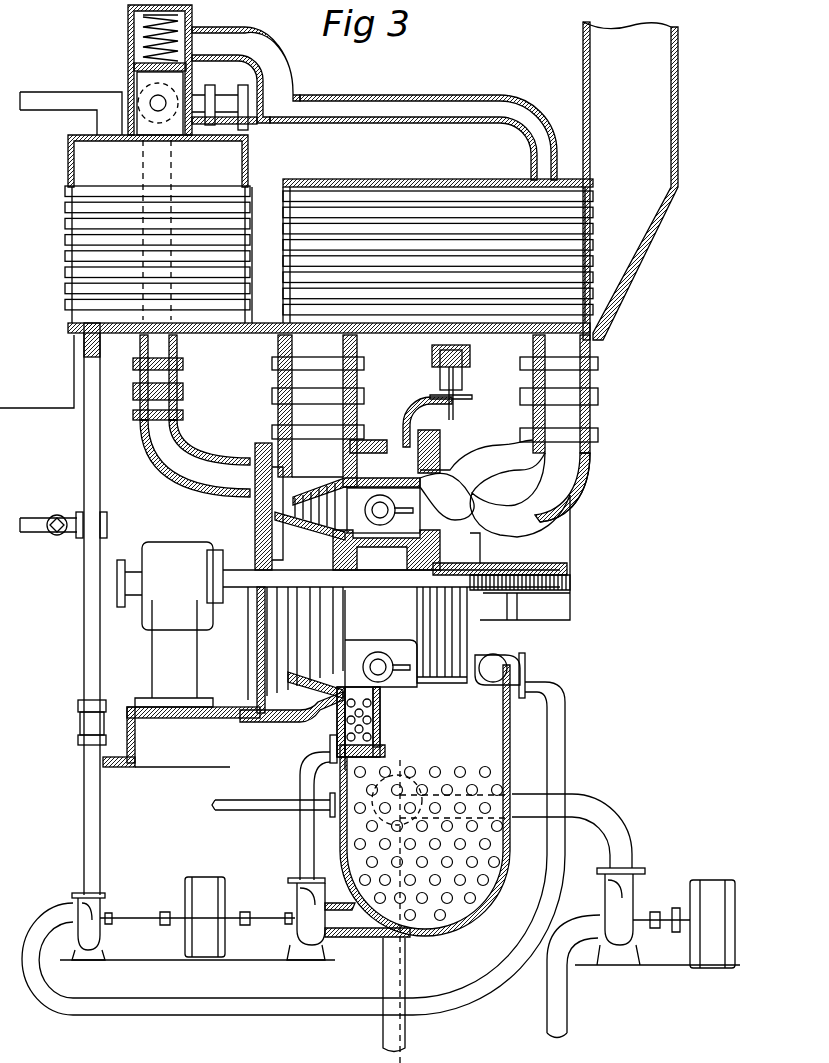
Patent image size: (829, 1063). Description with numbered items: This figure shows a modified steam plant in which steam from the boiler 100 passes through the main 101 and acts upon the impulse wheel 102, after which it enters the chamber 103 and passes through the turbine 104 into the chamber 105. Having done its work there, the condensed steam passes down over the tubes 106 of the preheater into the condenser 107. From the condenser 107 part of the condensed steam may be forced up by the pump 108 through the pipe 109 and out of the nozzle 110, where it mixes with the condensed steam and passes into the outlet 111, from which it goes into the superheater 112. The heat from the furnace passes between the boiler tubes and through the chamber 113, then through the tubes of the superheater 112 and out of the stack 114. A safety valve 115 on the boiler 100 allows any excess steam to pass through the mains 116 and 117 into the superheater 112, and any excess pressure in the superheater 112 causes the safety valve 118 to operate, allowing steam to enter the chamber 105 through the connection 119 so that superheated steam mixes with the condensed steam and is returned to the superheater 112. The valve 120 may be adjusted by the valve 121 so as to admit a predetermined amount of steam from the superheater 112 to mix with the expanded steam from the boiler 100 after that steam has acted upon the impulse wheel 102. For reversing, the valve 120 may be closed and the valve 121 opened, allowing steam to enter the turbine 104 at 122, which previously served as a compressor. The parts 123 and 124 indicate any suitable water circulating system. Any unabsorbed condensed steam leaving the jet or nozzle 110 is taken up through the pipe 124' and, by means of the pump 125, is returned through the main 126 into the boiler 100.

The boiler 100 is at (158, 161).
The main 101 is at (176, 487).
The impulse wheel 102 is at (256, 521).
The chamber 103 is at (356, 482).
The turbine 104 is at (310, 519).
The chamber 105 is at (360, 500).
The tubes of the preheater 106 is at (383, 703).
The condenser 107 is at (466, 930).
The pump 108 is at (305, 905).
The pipe 109 is at (300, 835).
The nozzle 110 is at (400, 660).
The outlet 111 is at (505, 488).
The superheater 112 is at (419, 179).
The chamber 113 is at (329, 254).
The stack 114 is at (630, 181).
The safety valve 115 is at (138, 38).
The main 116 is at (250, 47).
The main 117 is at (406, 95).
The safety valve 118 is at (431, 362).
The connection 119 is at (404, 426).
The valve 120 is at (320, 378).
The valve 121 is at (280, 398).
The turbine inlet (former compressor) 122 is at (458, 500).
The water circulating system 123 is at (592, 812).
The water circulating system 124 is at (239, 977).
The pipe 124' is at (525, 834).
The pump 125 is at (76, 906).
The main 126 is at (86, 810).